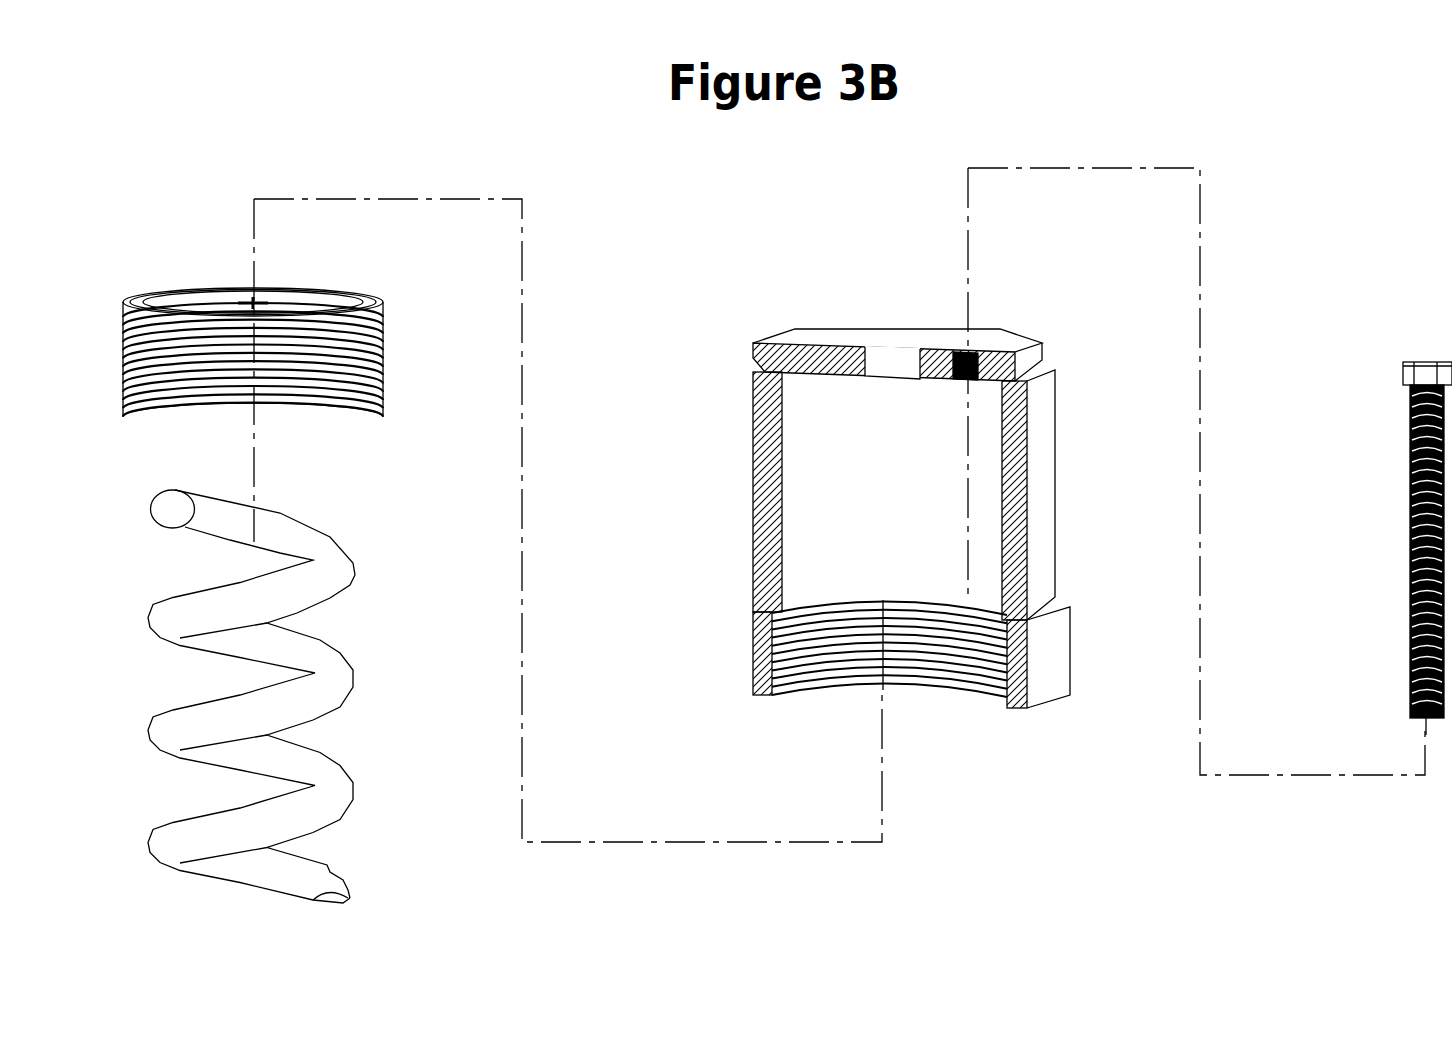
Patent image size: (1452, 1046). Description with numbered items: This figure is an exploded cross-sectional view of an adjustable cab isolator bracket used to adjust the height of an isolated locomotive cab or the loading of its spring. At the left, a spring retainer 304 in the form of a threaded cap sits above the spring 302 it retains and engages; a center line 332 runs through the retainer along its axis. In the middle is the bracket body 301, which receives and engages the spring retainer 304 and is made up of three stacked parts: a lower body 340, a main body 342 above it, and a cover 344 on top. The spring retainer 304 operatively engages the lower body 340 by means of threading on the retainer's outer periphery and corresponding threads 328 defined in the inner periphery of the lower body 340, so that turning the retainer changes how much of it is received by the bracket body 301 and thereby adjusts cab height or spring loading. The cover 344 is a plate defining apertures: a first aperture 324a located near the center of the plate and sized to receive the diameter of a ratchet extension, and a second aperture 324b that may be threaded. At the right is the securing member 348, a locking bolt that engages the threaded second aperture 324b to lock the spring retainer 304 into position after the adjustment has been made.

The spring retainer 304 is at (186, 330).
The central axis / drive slot 332 is at (252, 290).
The spring 302 is at (338, 828).
The bracket body 301 is at (686, 537).
The cover 344 is at (790, 340).
The first aperture 324a is at (887, 358).
The second aperture 324b is at (973, 365).
The main body 342 is at (1045, 470).
The threads 328 is at (903, 670).
The lower body 340 is at (1057, 660).
The securing member 348 is at (1396, 509).